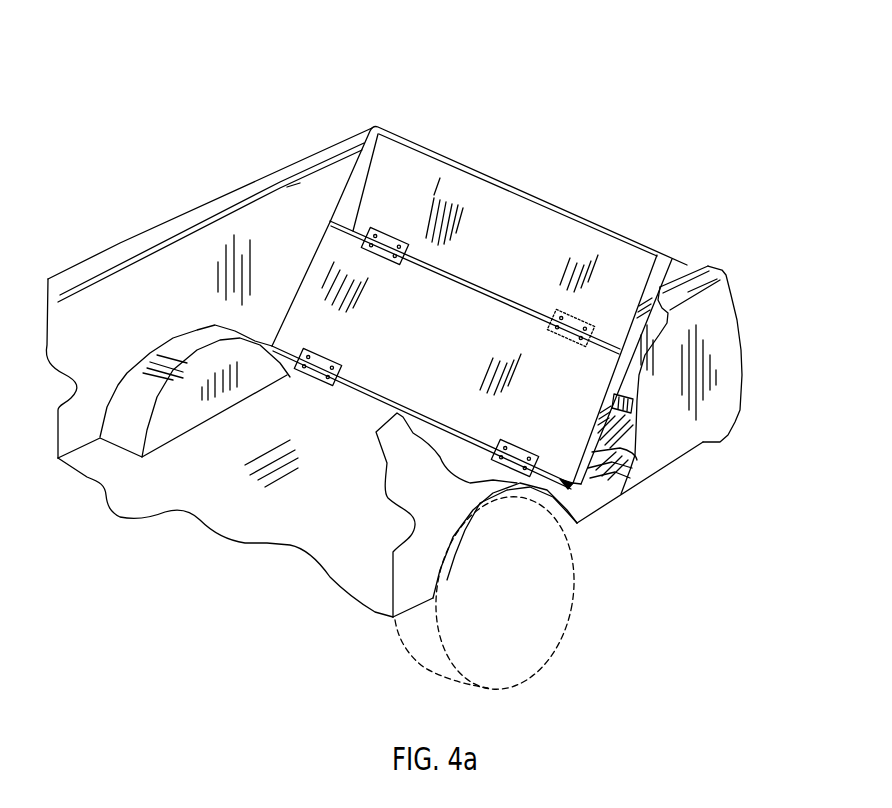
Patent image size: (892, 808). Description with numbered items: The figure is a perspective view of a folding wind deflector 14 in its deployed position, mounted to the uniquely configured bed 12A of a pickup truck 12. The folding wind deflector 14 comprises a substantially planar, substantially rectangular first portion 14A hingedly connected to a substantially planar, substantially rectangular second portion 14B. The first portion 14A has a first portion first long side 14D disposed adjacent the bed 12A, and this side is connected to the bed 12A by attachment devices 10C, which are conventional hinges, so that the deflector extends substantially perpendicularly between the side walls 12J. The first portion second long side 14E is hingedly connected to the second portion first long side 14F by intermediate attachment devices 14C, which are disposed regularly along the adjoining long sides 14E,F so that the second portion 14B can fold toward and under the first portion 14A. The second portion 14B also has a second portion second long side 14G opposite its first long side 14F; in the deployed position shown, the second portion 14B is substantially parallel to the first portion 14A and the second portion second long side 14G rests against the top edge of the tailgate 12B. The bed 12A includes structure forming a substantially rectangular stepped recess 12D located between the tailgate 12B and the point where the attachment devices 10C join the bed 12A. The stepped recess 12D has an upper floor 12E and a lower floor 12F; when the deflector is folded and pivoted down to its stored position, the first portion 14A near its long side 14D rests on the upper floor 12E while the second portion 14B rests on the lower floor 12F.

The attachment devices 10C is at (315, 378).
The pickup truck 12 is at (451, 414).
The bed 12A is at (292, 519).
The tailgate 12B is at (685, 264).
The stepped recess 12D is at (619, 433).
The upper floor 12E is at (596, 445).
The lower floor 12F is at (612, 449).
The side walls 12J is at (85, 297).
The folding wind deflector 14 is at (471, 340).
The first portion 14A is at (293, 340).
The second portion 14B is at (503, 210).
The intermediate attachment devices 14C is at (393, 233).
The first portion first long side 14D is at (323, 268).
The first portion second long side and second portion first long side 14E,F is at (513, 252).
The first portion second long side 14E is at (513, 252).
The second portion first long side 14F is at (355, 228).
The second portion second long side 14G is at (593, 220).